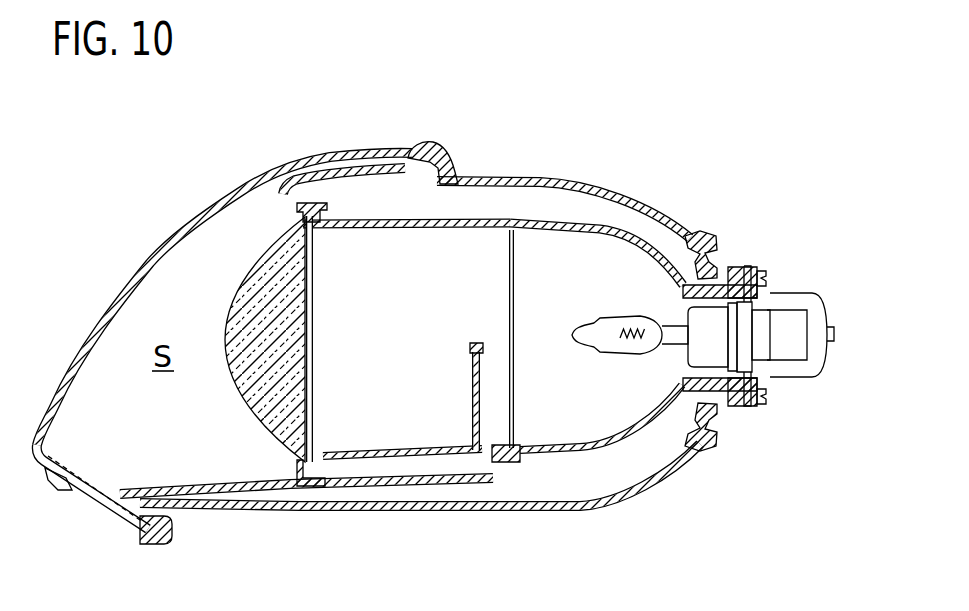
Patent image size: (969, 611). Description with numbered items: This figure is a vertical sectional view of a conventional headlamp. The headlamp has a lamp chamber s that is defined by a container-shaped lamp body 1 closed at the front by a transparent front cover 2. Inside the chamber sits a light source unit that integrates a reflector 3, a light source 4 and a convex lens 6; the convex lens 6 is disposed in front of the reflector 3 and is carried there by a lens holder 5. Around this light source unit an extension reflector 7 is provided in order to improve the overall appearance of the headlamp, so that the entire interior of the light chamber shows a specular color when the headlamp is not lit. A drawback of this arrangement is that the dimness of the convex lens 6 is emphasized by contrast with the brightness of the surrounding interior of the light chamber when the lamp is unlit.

The lamp body 1 is at (615, 178).
The transparent front cover 2 is at (151, 262).
The reflector 3 is at (530, 217).
The light source 4 is at (637, 320).
The lens holder 5 is at (375, 220).
The convex lens 6 is at (245, 265).
The extension reflector 7 is at (292, 175).